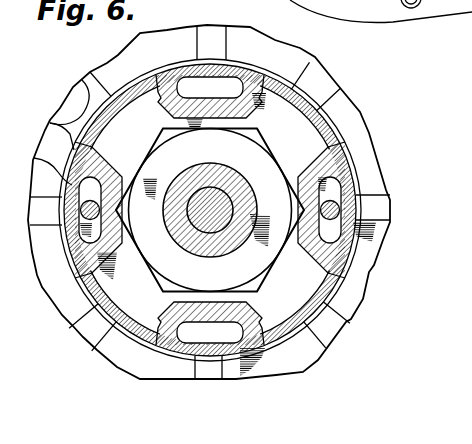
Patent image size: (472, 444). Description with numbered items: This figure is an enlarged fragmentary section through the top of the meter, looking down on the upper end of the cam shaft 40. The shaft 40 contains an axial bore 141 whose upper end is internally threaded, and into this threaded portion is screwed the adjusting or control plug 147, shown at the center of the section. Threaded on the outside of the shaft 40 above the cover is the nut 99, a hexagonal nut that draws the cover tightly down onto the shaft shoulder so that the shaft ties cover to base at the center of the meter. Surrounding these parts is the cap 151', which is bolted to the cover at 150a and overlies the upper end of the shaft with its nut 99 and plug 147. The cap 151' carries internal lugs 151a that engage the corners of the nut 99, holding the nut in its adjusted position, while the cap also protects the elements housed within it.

The cam shaft 40 is at (232, 196).
The bore 141 is at (241, 181).
The internal lugs 151a is at (173, 66).
The cap 151' is at (211, 199).
The bolting of the cap to the cover 150a is at (357, 208).
The nut 99 is at (263, 249).
The adjusting or control plug 147 is at (213, 220).